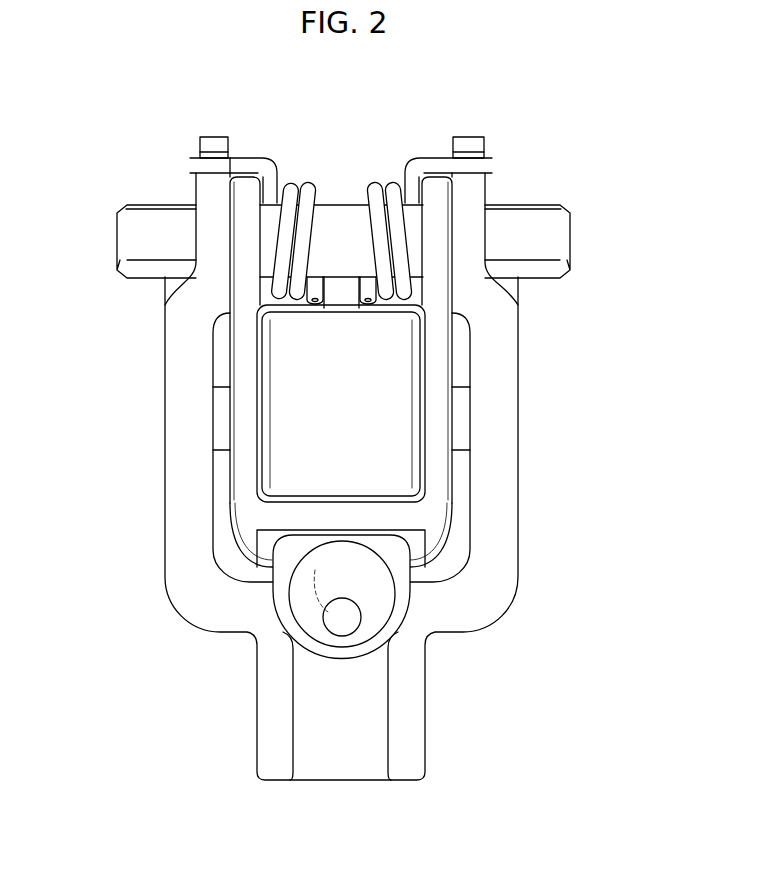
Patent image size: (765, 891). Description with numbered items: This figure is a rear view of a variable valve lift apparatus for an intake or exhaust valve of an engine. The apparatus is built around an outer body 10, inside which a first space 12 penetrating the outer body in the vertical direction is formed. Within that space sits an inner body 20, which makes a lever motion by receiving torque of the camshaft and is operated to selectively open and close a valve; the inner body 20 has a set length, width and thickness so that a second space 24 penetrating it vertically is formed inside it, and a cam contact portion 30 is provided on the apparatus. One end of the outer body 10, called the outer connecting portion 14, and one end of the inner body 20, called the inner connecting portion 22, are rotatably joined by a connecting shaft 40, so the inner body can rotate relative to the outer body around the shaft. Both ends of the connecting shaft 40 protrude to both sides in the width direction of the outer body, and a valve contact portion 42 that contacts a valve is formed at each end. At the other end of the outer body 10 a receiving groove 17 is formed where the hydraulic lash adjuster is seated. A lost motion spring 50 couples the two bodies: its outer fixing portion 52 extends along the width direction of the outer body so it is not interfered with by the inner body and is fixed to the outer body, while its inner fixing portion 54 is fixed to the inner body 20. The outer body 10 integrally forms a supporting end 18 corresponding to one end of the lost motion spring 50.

The outer body 10 is at (490, 412).
The first space 12 is at (466, 485).
The outer connecting portion 14 is at (215, 185).
The receiving groove 17 is at (368, 588).
The supporting end 18 is at (470, 137).
The inner body 20 is at (441, 392).
The inner connecting portion 22 is at (246, 192).
The second space 24 is at (416, 326).
The cam contact portion 30 is at (292, 470).
The connecting shaft 40 is at (543, 203).
The valve contact portion 42 is at (150, 233).
The lost motion spring 50 is at (372, 190).
The outer fixing portion 52 is at (437, 163).
The inner fixing portion 54 is at (367, 303).